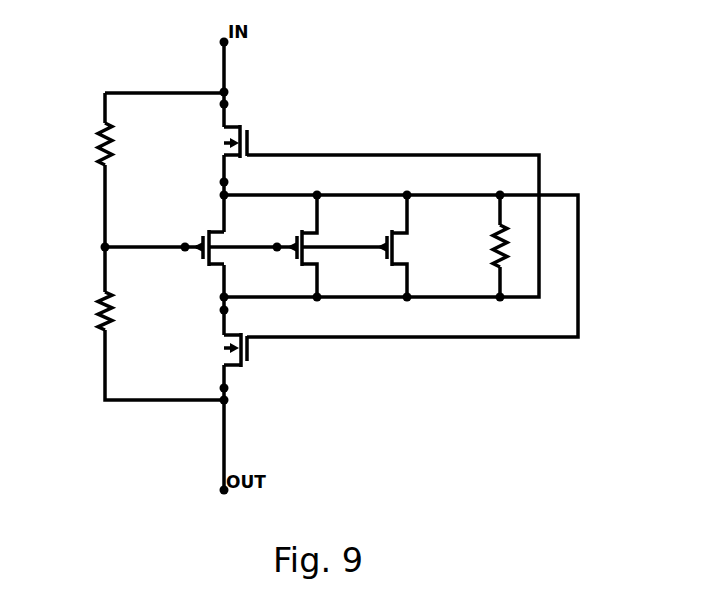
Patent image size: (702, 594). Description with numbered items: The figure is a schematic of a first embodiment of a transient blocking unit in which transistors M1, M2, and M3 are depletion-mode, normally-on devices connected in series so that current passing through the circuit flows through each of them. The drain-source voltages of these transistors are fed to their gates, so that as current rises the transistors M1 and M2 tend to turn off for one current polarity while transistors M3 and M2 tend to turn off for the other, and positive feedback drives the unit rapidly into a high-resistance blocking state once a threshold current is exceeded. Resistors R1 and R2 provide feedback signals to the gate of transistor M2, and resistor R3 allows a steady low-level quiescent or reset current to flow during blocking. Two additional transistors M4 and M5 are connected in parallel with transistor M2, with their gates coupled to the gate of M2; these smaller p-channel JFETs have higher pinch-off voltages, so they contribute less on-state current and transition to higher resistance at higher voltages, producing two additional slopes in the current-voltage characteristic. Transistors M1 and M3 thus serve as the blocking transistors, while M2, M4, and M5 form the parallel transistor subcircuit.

The resistor R1 is at (97, 146).
The resistor R2 is at (97, 316).
The resistor R3 is at (491, 247).
The transistor M1 is at (248, 136).
The transistor M2 is at (203, 233).
The transistor M3 is at (250, 364).
The transistor M4 is at (298, 264).
The transistor M5 is at (388, 264).